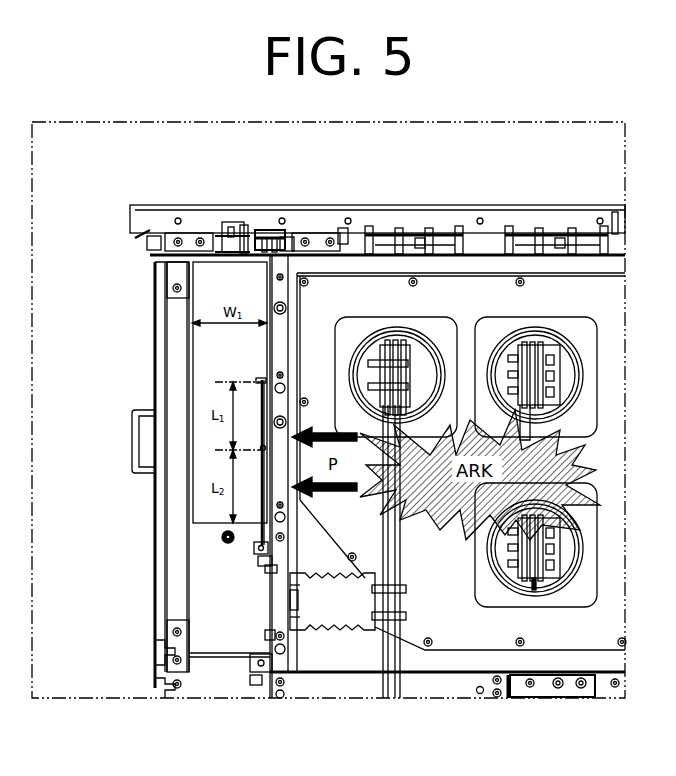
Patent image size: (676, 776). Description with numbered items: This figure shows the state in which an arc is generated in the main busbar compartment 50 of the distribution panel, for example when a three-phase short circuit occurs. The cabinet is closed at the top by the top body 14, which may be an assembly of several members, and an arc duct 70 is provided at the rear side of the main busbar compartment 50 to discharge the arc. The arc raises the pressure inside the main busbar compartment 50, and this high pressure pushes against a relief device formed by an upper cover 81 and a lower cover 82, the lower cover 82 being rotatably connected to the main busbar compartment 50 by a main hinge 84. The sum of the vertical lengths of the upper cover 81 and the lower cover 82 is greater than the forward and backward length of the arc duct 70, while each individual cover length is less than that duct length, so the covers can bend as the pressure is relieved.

The top body 14 is at (414, 226).
The main busbar compartment 50 is at (556, 298).
The arc duct 70 is at (230, 287).
The upper cover 81 is at (262, 381).
The lower cover 82 is at (256, 541).
The main hinge 84 is at (260, 554).